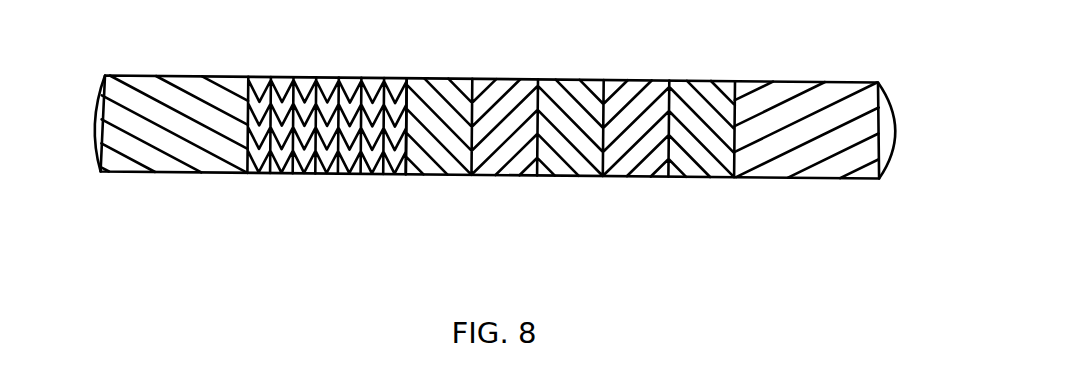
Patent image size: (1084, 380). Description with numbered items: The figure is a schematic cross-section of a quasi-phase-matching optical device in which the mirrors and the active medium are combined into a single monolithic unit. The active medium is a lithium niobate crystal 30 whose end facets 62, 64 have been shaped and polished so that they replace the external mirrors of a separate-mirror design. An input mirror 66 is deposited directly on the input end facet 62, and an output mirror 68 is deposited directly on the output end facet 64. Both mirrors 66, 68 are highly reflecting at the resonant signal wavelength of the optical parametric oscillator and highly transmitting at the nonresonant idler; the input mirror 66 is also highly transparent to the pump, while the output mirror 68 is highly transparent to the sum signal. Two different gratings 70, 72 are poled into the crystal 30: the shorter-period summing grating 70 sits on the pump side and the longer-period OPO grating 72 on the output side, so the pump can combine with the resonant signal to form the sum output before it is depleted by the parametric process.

The LiNbO3 crystal 30 is at (320, 176).
The end facet 62 is at (106, 162).
The end facet 64 is at (877, 163).
The input mirror 66 is at (97, 167).
The output mirror 68 is at (887, 170).
The summing grating 70 is at (408, 76).
The OPO grating 72 is at (408, 76).